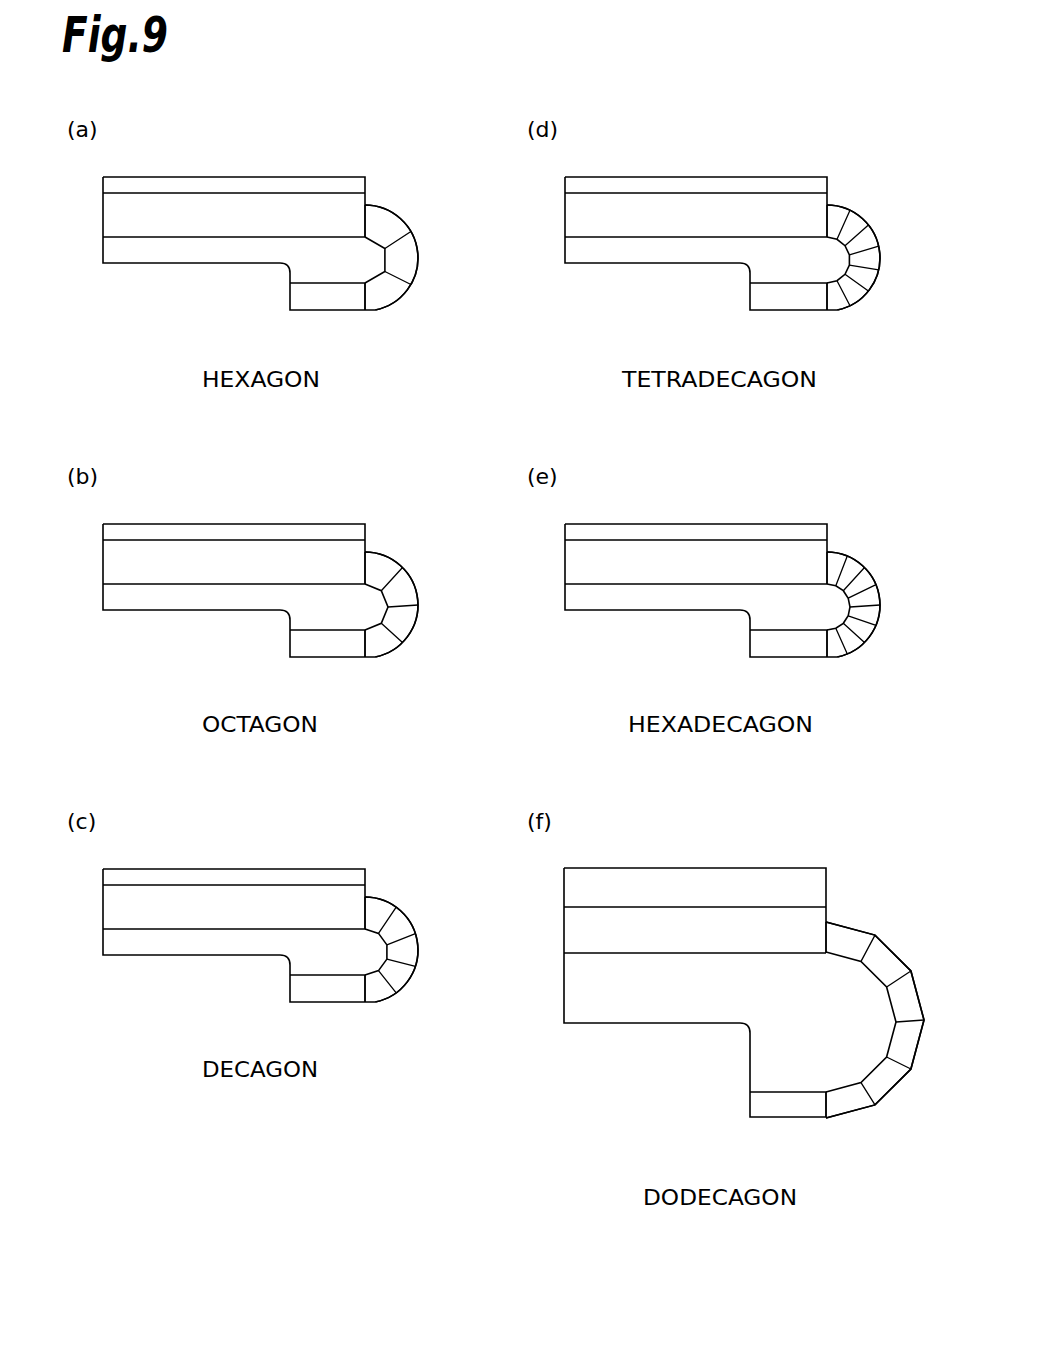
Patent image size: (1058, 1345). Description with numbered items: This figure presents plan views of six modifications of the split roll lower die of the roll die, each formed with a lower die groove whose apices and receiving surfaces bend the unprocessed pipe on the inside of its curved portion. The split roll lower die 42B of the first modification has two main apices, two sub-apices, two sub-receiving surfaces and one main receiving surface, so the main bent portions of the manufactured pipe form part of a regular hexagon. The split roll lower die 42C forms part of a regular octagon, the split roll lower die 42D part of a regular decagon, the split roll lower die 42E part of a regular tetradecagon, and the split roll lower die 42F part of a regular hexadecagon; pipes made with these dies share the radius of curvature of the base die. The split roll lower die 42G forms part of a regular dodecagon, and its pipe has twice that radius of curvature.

The split roll lower die 42B is at (246, 177).
The split roll lower die 42C is at (246, 524).
The split roll lower die 42D is at (246, 868).
The split roll lower die 42E is at (702, 177).
The split roll lower die 42F is at (702, 524).
The split roll lower die 42G is at (700, 868).